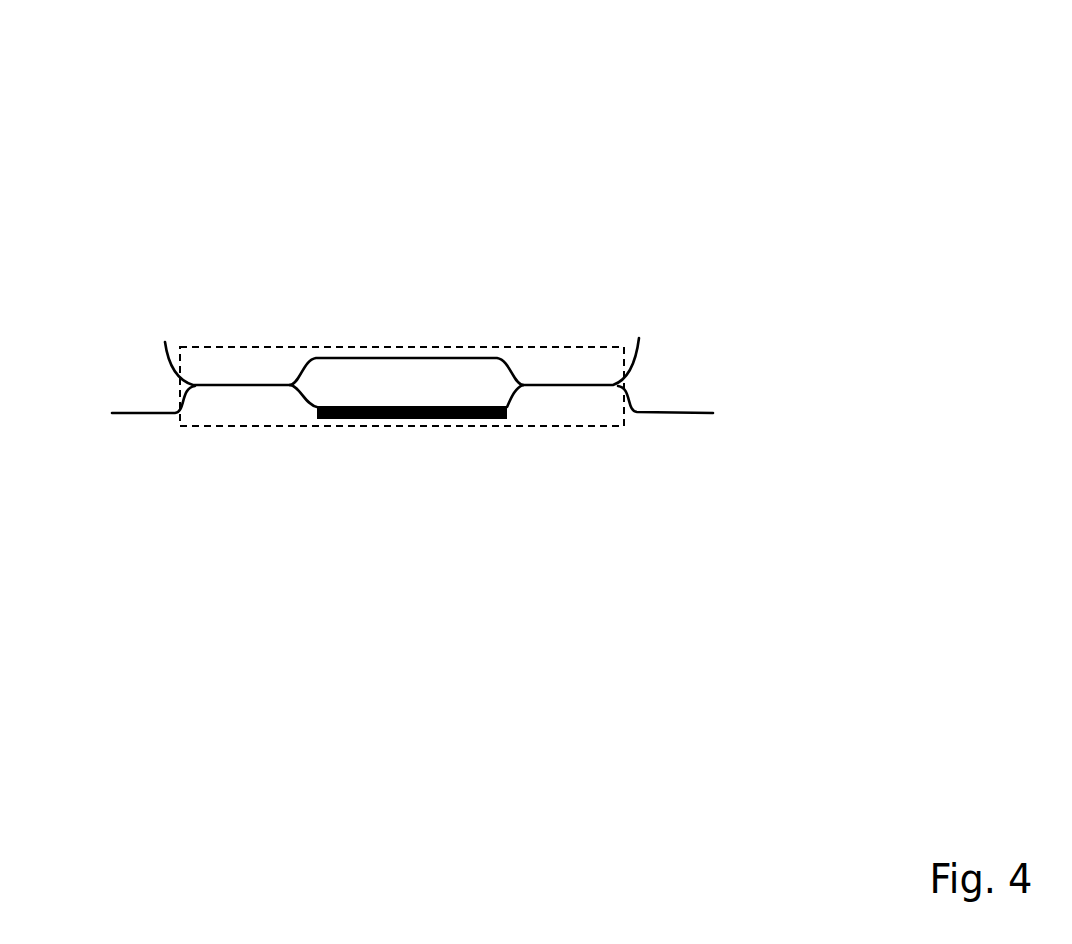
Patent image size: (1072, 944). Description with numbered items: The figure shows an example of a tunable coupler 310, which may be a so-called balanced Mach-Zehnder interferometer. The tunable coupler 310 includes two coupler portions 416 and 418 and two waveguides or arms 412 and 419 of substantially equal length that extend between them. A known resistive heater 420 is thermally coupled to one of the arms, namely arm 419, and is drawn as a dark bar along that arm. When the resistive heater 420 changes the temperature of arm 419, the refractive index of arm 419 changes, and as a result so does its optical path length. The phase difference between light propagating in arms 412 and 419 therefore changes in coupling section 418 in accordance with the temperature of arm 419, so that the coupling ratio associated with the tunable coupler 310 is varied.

The tunable coupler 310 is at (578, 338).
The arm 412 is at (402, 347).
The coupler portion 416 is at (253, 415).
The coupler portion 418 is at (578, 415).
The arm 419 is at (513, 392).
The resistive heater 420 is at (406, 420).